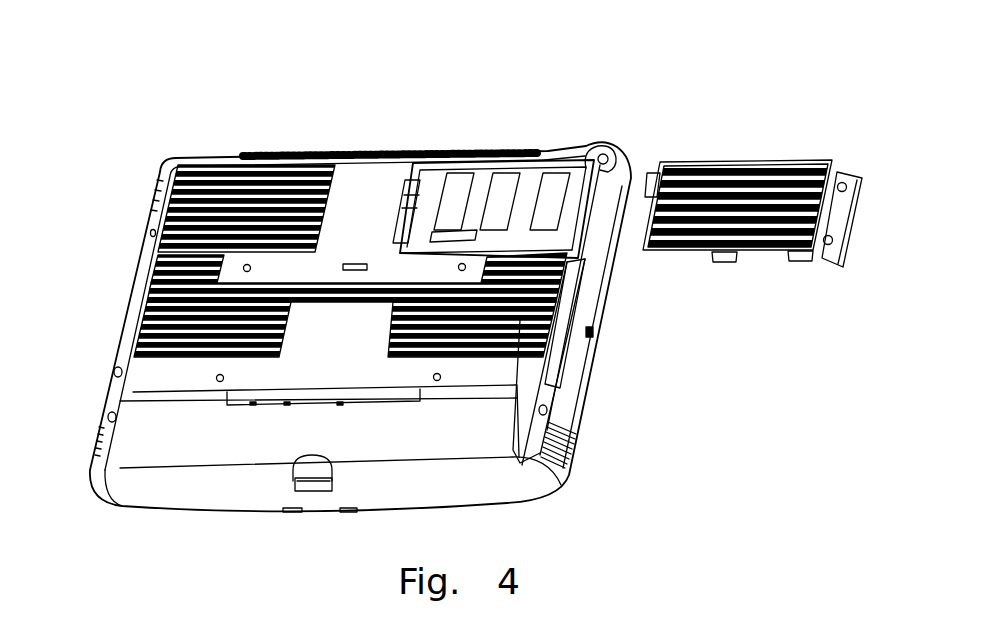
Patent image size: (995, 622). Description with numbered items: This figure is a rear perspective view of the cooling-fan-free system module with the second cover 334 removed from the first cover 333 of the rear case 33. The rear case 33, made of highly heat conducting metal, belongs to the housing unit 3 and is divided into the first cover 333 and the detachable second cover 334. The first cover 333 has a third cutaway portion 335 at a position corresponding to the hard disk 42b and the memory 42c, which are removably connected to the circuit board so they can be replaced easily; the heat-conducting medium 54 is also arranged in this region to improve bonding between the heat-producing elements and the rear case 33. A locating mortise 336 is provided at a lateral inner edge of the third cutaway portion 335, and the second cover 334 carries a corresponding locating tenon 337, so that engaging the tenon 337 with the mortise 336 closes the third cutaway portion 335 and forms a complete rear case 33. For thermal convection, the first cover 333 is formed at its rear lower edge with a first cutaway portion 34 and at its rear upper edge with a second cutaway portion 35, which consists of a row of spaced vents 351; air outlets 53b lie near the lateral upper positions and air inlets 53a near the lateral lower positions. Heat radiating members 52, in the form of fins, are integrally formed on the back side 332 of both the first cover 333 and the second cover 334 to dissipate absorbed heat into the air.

The housing unit 3 is at (155, 138).
The rear case 33 is at (119, 325).
The first cutaway portion 34 is at (327, 484).
The second cutaway portion 35 is at (447, 148).
The hard disk 42b is at (547, 240).
The memory 42c is at (592, 332).
The heat radiating members 52 is at (203, 207).
The air inlets 53a is at (98, 441).
The air outlets 53b is at (158, 200).
The heat-conducting medium 54 is at (562, 190).
The back side 332 is at (222, 260).
The first cover 333 is at (549, 374).
The second cover 334 is at (840, 217).
The third cutaway portion 335 is at (603, 148).
The locating mortise 336 is at (421, 186).
The locating tenon 337 is at (643, 190).
The spaced vents 351 is at (312, 150).